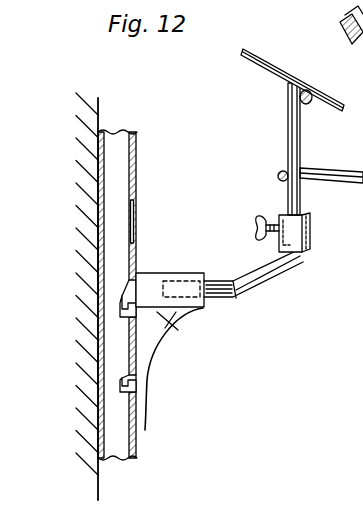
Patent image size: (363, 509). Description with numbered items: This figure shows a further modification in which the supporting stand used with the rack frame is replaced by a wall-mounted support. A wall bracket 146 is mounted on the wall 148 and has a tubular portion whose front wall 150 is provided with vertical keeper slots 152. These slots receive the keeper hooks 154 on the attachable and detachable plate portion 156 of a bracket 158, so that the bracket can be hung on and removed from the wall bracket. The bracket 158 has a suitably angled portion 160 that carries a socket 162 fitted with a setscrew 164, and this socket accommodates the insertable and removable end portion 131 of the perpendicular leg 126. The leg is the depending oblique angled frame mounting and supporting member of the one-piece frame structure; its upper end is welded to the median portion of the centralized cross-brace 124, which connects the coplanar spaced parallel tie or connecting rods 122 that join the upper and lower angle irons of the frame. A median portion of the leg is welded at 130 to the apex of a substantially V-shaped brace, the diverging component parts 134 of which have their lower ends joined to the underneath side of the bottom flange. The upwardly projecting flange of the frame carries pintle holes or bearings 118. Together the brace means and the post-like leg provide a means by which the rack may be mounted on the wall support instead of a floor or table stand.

The pintle holes or bearings 118 is at (338, 22).
The tie or connecting rods 122 is at (270, 67).
The cross-brace 124 is at (309, 104).
The perpendicular leg 126 is at (289, 110).
The weld 130 is at (281, 175).
The lower end of the leg 131 is at (298, 206).
The diverging component parts of the V-shaped brace 134 is at (335, 183).
The wall bracket 146 is at (119, 128).
The wall 148 is at (93, 112).
The front wall of the tubular portion 150 is at (138, 145).
The vertical keeper slots 152 is at (136, 197).
The keeper hooks 154 is at (126, 308).
The attachable and detachable plate portion 156 is at (174, 369).
The bracket 158 is at (196, 270).
The angled portion 160 is at (268, 264).
The socket 162 is at (306, 231).
The setscrew 164 is at (258, 226).